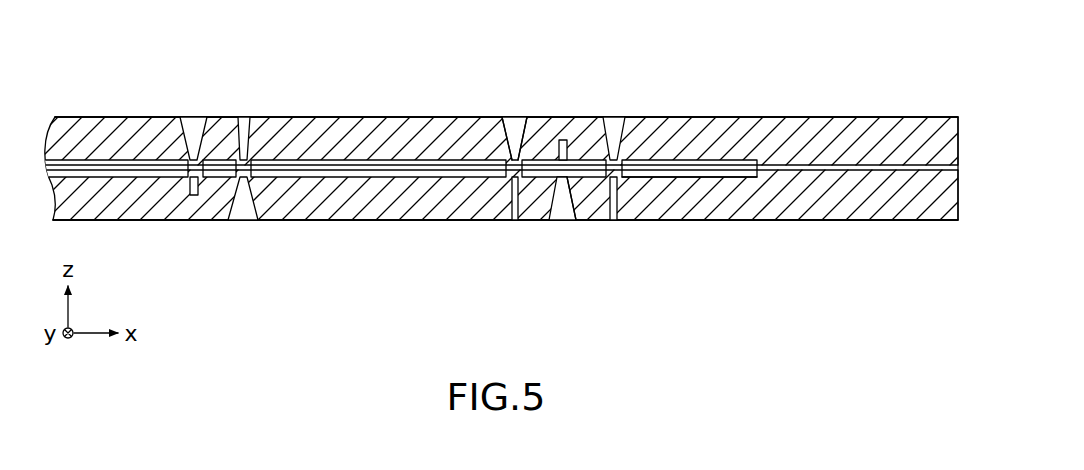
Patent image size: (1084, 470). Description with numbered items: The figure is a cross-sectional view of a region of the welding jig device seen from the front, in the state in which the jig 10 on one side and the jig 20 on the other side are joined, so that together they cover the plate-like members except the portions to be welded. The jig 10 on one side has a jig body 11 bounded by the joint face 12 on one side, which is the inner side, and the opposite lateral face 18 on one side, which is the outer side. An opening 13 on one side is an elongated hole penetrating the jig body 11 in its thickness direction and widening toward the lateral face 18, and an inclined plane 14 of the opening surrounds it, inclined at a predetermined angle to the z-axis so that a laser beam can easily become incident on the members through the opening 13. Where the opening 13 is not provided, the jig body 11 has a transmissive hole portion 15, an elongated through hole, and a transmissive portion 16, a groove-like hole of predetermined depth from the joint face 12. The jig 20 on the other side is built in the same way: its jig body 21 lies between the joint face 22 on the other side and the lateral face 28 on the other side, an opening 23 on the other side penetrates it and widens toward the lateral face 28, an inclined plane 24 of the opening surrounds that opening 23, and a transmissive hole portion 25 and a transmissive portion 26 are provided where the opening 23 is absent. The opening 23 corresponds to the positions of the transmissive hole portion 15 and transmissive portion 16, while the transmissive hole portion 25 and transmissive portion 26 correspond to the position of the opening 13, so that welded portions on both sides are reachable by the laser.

The jig on one side 10 is at (837, 114).
The jig body 11 is at (784, 140).
The joint face on one side 12 is at (688, 160).
The opening on one side 13 is at (509, 117).
The inclined plane of the opening 14 is at (517, 117).
The transmissive hole portion 15 is at (244, 117).
The transmissive portion 16 is at (564, 140).
The lateral face on one side 18 is at (380, 117).
The jig on the other side 20 is at (836, 226).
The jig body 21 is at (784, 200).
The joint face on the other side 22 is at (690, 178).
The opening on the other side 23 is at (574, 200).
The inclined plane of the opening 24 is at (558, 222).
The transmissive hole portion 25 is at (516, 222).
The transmissive portion 26 is at (194, 196).
The lateral face on the other side 28 is at (372, 220).